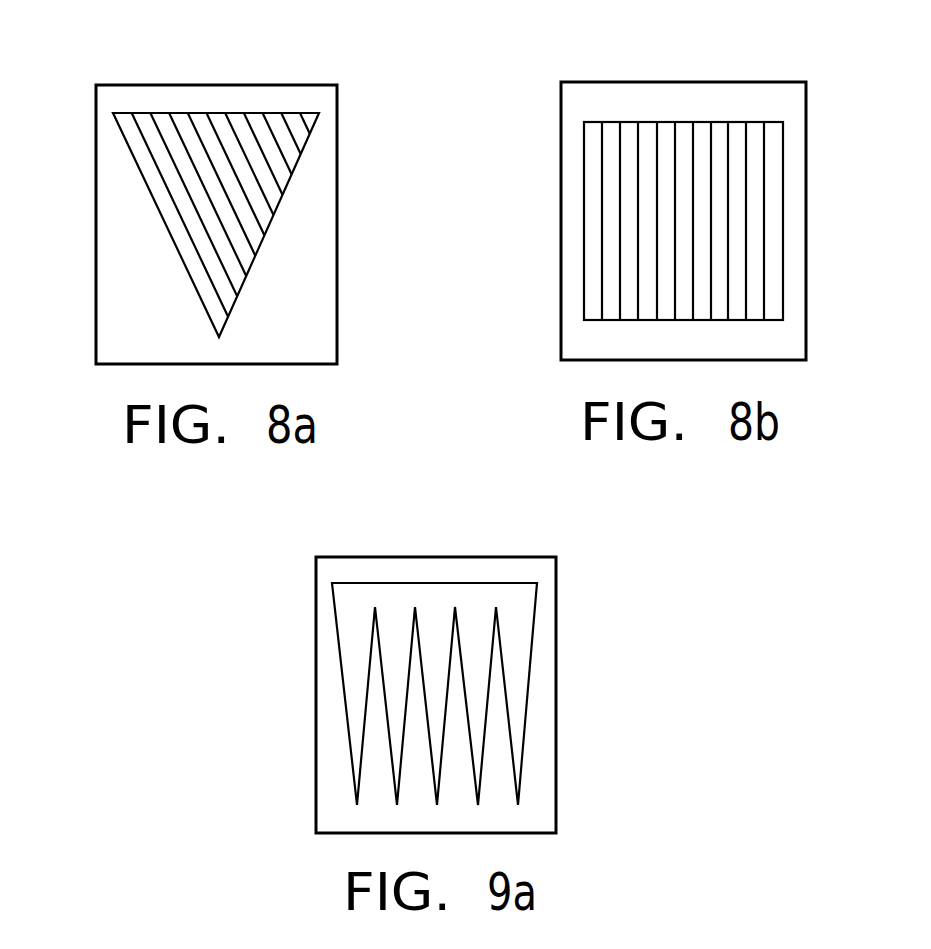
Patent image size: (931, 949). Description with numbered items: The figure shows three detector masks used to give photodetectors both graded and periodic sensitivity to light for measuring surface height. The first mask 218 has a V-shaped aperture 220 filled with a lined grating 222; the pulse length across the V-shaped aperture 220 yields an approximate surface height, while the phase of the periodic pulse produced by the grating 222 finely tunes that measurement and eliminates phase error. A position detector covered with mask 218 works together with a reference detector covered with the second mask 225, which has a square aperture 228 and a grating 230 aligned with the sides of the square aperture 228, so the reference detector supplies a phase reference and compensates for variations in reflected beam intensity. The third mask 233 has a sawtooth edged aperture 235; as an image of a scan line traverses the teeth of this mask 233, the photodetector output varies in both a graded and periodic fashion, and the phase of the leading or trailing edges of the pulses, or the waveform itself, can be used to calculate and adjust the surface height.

In FIG. 8a, the mask 218 is at (96, 114).
In FIG. 8a, the V-shaped aperture 220 is at (155, 214).
In FIG. 8a, the lined grating 222 is at (247, 128).
In FIG. 8b, the mask 225 is at (561, 110).
In FIG. 8b, the square aperture 228 is at (785, 181).
In FIG. 8b, the grating 230 is at (694, 147).
In FIG. 9a, the mask 233 is at (316, 587).
In FIG. 9a, the sawtooth edged aperture 235 is at (342, 681).